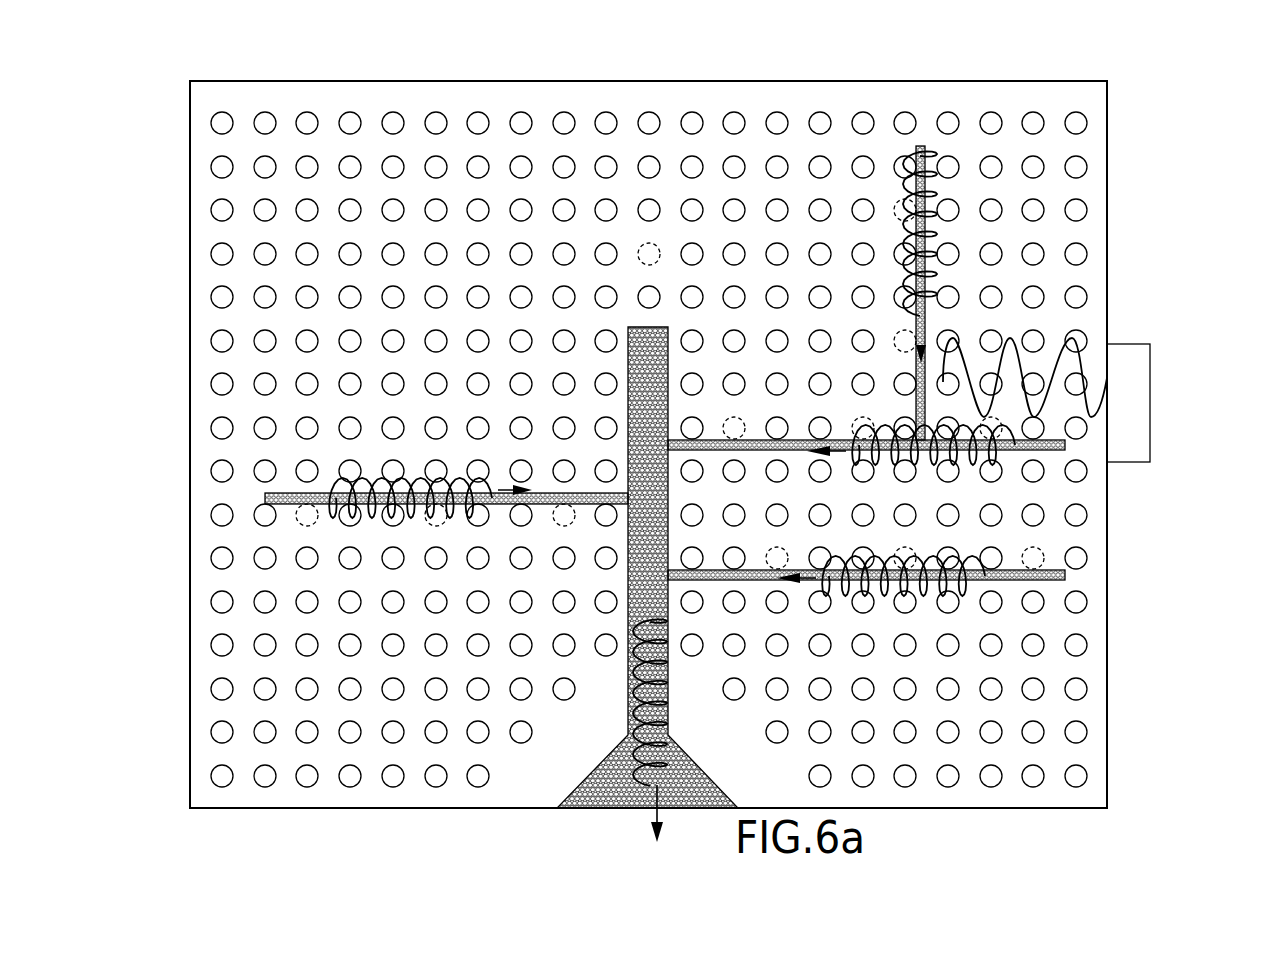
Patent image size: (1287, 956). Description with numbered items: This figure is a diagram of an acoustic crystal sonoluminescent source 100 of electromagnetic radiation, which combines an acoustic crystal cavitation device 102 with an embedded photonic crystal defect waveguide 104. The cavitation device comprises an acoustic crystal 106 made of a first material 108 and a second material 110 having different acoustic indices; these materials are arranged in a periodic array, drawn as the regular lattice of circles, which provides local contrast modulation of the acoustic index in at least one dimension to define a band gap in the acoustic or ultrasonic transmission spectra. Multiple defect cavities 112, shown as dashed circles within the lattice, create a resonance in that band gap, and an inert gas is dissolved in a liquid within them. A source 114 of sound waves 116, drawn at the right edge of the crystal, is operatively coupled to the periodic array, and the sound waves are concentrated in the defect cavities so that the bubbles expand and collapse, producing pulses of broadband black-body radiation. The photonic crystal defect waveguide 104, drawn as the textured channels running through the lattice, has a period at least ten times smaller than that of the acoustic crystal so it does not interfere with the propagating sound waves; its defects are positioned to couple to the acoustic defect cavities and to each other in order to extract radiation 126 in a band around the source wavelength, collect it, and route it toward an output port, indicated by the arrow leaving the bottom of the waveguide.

The acoustic crystal sonoluminescent source 100 is at (1195, 190).
The acoustic crystal cavitation device 102 is at (670, 72).
The photonic crystal defect waveguide 104 is at (669, 540).
The acoustic crystal 106 is at (408, 80).
The first material 108 is at (298, 107).
The second material 110 is at (298, 207).
The defect cavities 112 is at (634, 248).
The source of sound waves 114 is at (1151, 390).
The sound waves 116 is at (1052, 361).
The radiation 126 is at (640, 673).